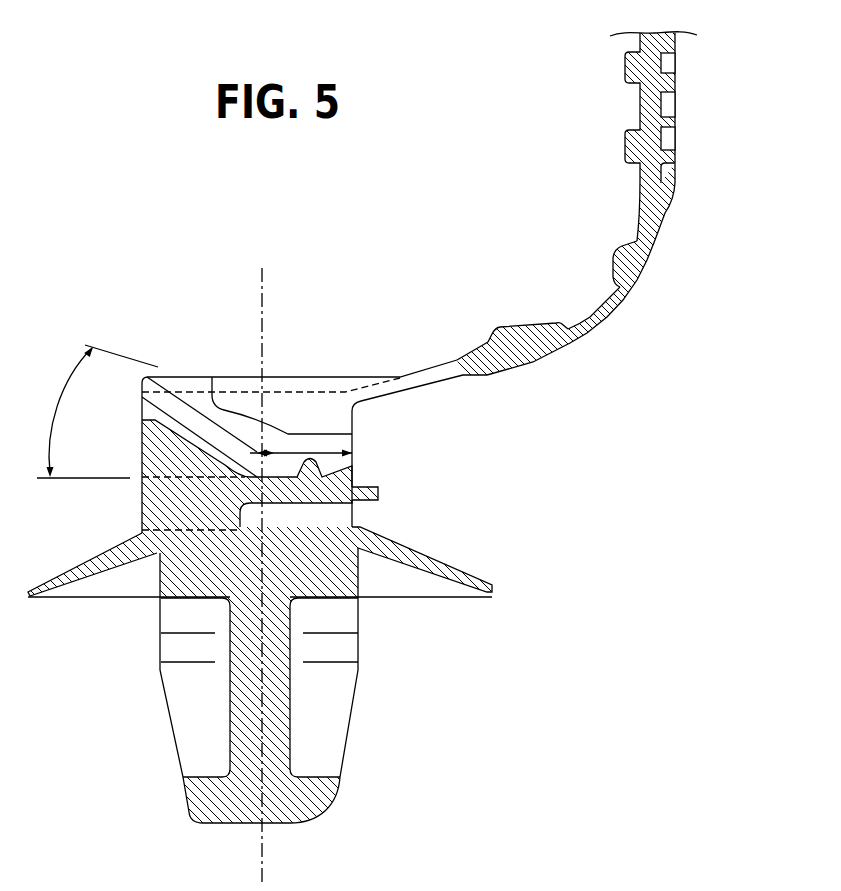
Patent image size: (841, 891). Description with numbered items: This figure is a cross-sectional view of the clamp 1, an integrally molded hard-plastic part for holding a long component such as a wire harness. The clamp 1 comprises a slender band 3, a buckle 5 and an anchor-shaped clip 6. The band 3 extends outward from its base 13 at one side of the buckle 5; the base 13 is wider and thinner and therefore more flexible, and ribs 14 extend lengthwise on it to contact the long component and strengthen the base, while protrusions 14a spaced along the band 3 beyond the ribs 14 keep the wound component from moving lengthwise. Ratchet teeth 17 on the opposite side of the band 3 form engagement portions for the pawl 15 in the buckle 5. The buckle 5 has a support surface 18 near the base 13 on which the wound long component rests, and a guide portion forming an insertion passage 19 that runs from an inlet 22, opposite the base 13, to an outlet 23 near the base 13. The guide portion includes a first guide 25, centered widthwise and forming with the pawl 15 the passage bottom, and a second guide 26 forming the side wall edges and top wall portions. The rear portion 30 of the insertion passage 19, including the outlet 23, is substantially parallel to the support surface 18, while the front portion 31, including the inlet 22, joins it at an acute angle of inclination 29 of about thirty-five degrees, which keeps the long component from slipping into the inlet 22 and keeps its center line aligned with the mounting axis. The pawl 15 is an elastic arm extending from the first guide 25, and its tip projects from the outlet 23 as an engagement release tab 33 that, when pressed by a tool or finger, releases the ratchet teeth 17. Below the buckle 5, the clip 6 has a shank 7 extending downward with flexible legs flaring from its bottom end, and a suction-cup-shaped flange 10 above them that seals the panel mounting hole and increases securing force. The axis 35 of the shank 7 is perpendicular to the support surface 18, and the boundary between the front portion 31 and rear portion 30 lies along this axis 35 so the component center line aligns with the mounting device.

The clamp 1 is at (402, 222).
The slender band 3 is at (680, 121).
The buckle 5 is at (122, 490).
The anchor-shaped clip 6 is at (138, 706).
The shank 7 is at (273, 717).
The flange 10 is at (462, 570).
The base 13 is at (427, 377).
The ribs 14 is at (527, 332).
The protrusions 14a is at (620, 252).
The pawl 15 is at (310, 500).
The ratchet teeth 17 is at (680, 173).
The support surface 18 is at (355, 377).
The insertion passage 19 is at (280, 447).
The inlet 22 is at (148, 372).
The outlet 23 is at (345, 441).
The first guide 25 is at (188, 460).
The second guide 26 is at (226, 398).
The angle of inclination 29 is at (75, 412).
The rear portion 30 is at (305, 452).
The front portion 31 is at (198, 405).
The engagement release tab 33 is at (380, 495).
The axis 35 is at (272, 855).